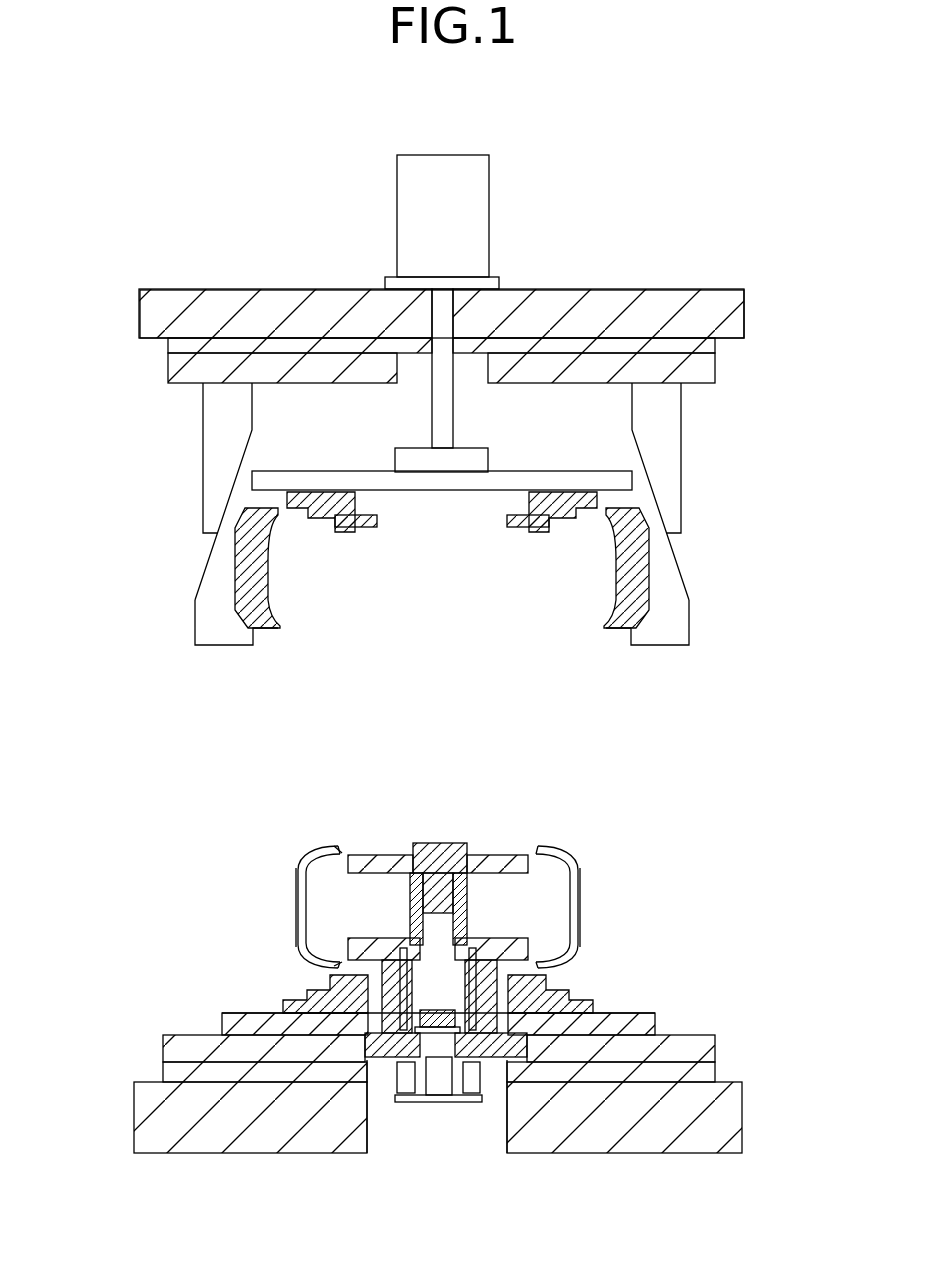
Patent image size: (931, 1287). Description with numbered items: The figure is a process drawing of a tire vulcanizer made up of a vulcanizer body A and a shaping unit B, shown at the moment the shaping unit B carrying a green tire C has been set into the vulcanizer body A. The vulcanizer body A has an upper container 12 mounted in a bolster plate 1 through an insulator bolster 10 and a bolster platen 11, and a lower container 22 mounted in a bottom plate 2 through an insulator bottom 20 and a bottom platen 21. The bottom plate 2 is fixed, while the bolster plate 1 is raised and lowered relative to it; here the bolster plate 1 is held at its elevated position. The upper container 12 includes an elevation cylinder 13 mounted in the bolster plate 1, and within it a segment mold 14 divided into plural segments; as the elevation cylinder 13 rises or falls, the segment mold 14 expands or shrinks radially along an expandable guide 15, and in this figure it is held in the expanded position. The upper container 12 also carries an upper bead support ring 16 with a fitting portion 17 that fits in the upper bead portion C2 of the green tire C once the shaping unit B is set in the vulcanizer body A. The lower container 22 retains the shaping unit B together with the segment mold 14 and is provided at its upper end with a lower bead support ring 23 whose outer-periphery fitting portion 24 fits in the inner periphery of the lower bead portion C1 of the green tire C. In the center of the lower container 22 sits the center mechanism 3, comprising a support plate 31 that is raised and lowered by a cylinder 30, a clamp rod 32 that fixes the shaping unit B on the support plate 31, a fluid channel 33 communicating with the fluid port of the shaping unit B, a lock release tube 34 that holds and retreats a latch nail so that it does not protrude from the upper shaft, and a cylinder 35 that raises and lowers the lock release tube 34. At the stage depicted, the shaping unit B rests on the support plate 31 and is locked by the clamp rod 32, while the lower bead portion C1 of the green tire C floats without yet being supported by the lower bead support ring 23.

The bolster plate 1 is at (683, 290).
The vulcanizer body A is at (108, 460).
The shaping unit B is at (578, 853).
The green tire C is at (580, 885).
The lower bead portion C1 is at (333, 978).
The upper bead portion C2 is at (335, 848).
The bottom plate 2 is at (648, 1140).
The center mechanism 3 is at (412, 1110).
The insulator bolster 10 is at (716, 345).
The bolster platen 11 is at (716, 376).
The upper container 12 is at (725, 512).
The elevation cylinder 13 is at (483, 206).
The segment mold 14 is at (203, 600).
The expandable guide 15 is at (210, 423).
The upper bead support ring 16 is at (368, 528).
The fitting portion 17 is at (345, 530).
The insulator bottom 20 is at (708, 1073).
The bottom platen 21 is at (705, 1048).
The lower container 22 is at (199, 1007).
The lower bead support ring 23 is at (528, 985).
The fitting portion 24 is at (308, 988).
The cylinder 30 is at (385, 1062).
The support plate 31 is at (393, 1035).
The clamp rod 32 is at (372, 975).
The fluid channel 33 is at (520, 1035).
The lock release tube 34 is at (540, 955).
The cylinder 35 is at (440, 1085).